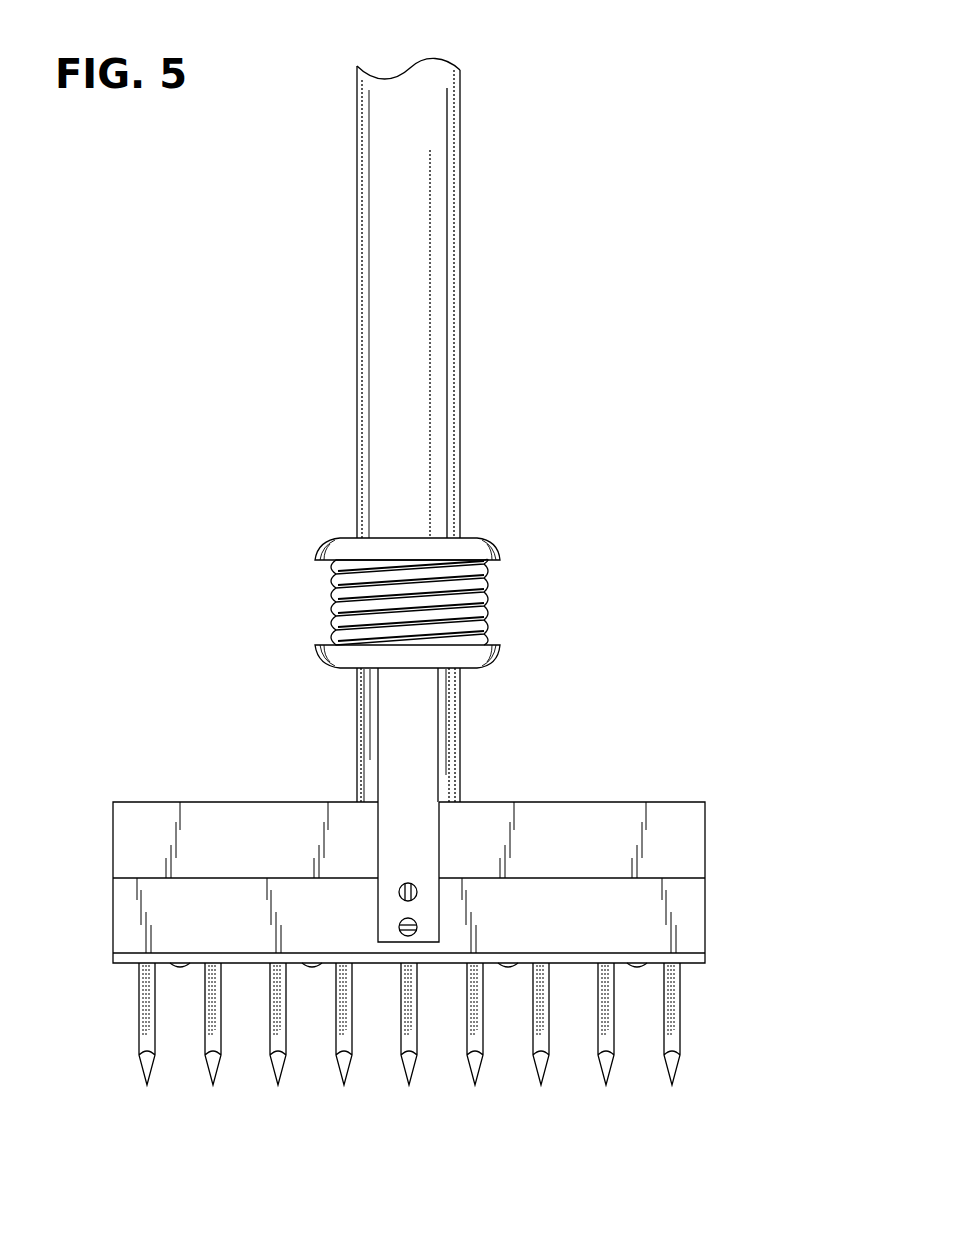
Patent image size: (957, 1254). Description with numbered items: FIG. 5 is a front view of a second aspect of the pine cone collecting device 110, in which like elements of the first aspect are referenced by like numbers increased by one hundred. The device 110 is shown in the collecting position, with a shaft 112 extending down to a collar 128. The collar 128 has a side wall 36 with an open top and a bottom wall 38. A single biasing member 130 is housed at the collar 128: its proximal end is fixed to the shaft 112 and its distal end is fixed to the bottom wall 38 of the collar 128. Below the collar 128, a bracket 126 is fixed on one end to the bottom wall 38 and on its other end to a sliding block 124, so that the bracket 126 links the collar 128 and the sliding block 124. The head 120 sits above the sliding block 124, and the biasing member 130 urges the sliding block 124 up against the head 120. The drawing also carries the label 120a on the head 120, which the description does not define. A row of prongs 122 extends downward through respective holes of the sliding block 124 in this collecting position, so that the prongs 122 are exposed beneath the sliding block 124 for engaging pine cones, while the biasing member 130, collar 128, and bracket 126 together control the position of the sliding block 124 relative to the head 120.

The device 110 is at (614, 212).
The shaft 112 is at (455, 140).
The collar 128 is at (552, 470).
The side wall 36 is at (497, 545).
The biasing member 130 is at (490, 595).
The bottom wall 38 is at (488, 668).
The bracket 126 is at (430, 727).
The head 120 is at (466, 875).
The plate seam 120a is at (705, 893).
The sliding block 124 is at (715, 923).
The prongs 122 is at (138, 1108).